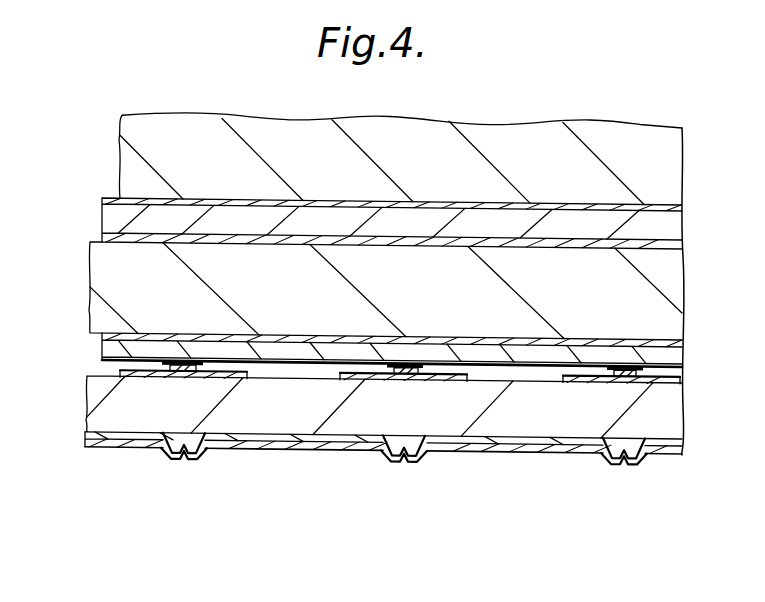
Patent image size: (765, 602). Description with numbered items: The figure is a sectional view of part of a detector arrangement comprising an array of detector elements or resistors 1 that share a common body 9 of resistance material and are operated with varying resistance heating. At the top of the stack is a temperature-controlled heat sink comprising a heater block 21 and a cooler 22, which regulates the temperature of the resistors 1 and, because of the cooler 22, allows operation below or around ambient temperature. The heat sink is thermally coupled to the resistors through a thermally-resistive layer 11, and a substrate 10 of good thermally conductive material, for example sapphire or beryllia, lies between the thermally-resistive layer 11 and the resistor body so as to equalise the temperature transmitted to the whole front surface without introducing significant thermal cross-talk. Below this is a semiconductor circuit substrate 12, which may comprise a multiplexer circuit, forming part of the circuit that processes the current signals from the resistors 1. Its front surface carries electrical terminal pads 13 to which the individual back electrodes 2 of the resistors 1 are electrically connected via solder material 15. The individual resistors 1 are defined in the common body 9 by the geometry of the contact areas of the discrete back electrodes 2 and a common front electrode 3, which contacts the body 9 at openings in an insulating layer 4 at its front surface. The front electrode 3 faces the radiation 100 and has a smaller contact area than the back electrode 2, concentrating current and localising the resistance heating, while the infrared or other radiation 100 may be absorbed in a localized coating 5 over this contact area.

The resistor 1 is at (365, 432).
The back electrode 2 is at (125, 371).
The front electrode 3 is at (128, 447).
The insulating layer 4 is at (88, 438).
The localized coating 5 is at (183, 453).
The common body 9 is at (108, 412).
The substrate 10 is at (102, 263).
The thermally-resistive layer 11 is at (117, 213).
The semiconductor circuit substrate 12 is at (107, 348).
The electrical terminal pad 13 is at (188, 360).
The solder material 15 is at (178, 366).
The heater block 21 is at (367, 158).
The cooler 22 is at (140, 132).
The radiation 100 is at (363, 474).